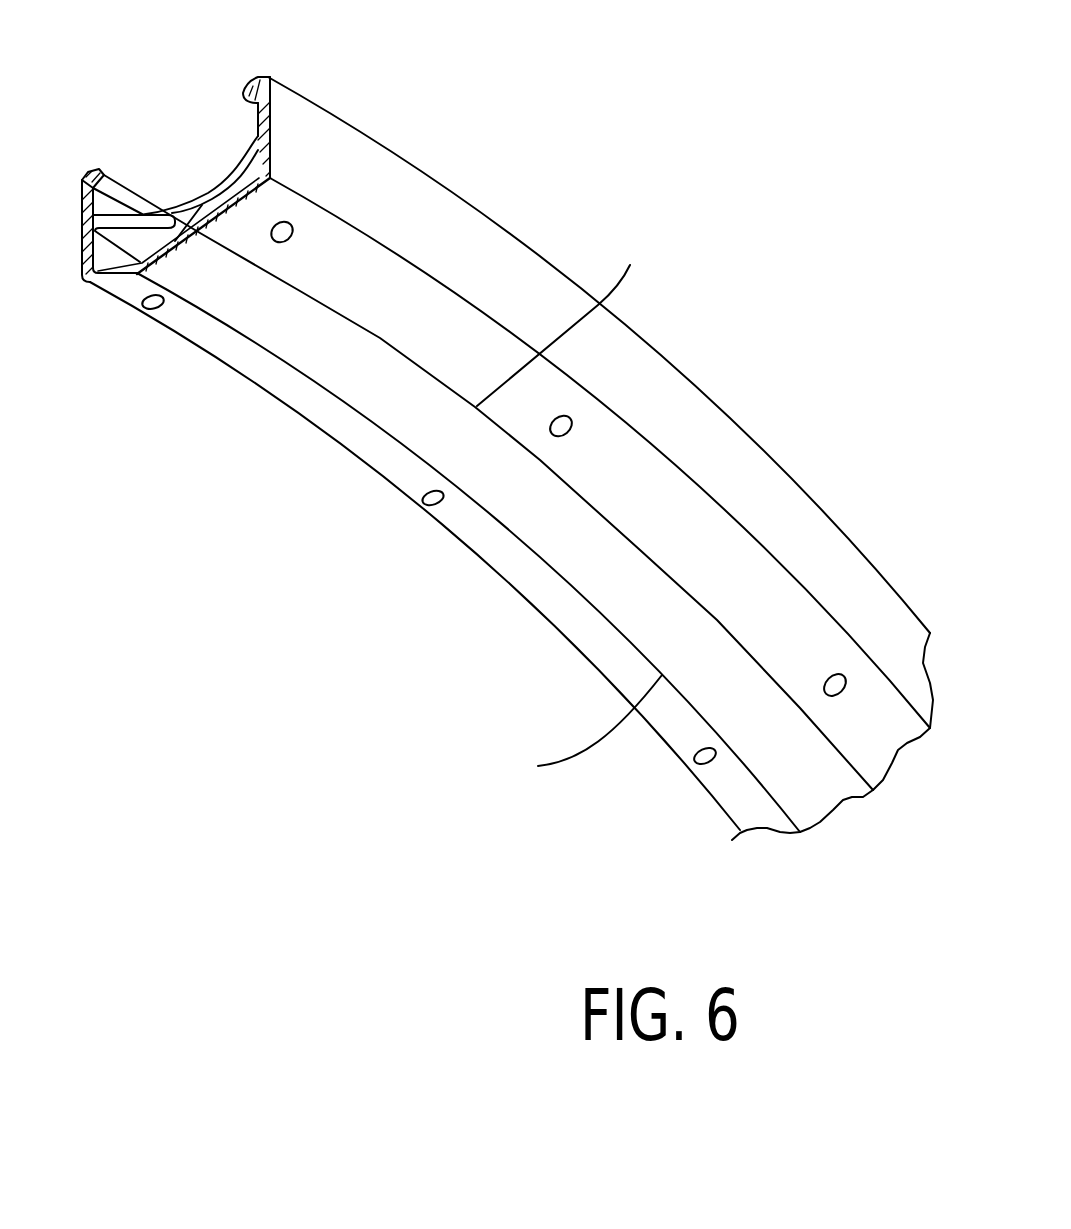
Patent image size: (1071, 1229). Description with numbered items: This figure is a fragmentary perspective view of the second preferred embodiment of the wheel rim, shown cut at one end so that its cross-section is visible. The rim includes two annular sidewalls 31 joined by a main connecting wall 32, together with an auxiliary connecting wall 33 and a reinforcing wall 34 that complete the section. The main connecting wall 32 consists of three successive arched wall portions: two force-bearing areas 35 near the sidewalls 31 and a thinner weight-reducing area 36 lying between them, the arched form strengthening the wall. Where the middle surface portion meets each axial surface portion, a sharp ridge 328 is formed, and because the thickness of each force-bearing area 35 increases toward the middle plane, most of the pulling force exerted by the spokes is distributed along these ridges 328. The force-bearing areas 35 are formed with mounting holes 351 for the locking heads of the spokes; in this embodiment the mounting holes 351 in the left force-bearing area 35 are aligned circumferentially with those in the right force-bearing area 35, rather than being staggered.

The annular sidewall 31 is at (303, 125).
The main connecting wall 32 is at (175, 249).
The auxiliary connecting wall 33 is at (183, 197).
The reinforcing wall 34 is at (140, 214).
The force-bearing area 35 is at (232, 209).
The weight-reducing area 36 is at (201, 193).
The sharp ridge 328 is at (568, 501).
The mounting hole 351 is at (293, 233).